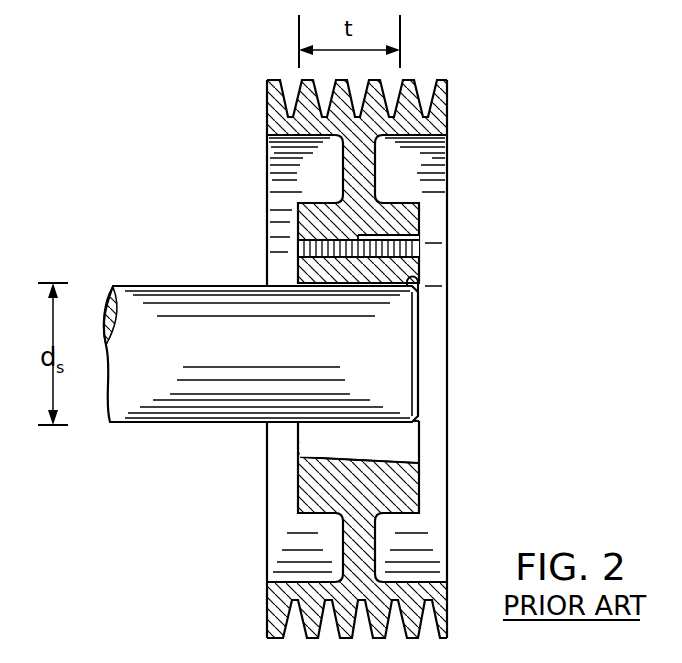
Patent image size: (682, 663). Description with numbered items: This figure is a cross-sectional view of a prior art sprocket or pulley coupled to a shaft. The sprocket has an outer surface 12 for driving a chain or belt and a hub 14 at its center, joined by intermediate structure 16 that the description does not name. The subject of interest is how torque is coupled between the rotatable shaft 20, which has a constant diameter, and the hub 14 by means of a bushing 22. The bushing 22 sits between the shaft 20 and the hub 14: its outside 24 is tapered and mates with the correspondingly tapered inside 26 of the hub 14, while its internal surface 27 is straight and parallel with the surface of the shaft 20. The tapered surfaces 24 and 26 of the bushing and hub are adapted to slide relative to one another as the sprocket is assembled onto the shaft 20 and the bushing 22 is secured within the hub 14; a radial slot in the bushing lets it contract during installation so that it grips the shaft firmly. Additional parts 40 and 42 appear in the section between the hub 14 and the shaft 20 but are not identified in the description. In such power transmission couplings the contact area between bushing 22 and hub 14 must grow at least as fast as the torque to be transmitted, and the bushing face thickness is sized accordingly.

The outer surface 12 is at (267, 110).
The hub 14 is at (297, 212).
The web 16 is at (358, 170).
The rotatable shaft 20 is at (140, 402).
The bushing 22 is at (418, 280).
The outside tapered surface of bushing 24 is at (387, 462).
The inside tapered surface of hub 26 is at (300, 466).
The internal surface of bushing 27 is at (340, 423).
The key 40 is at (418, 243).
The bushing 42 is at (298, 251).